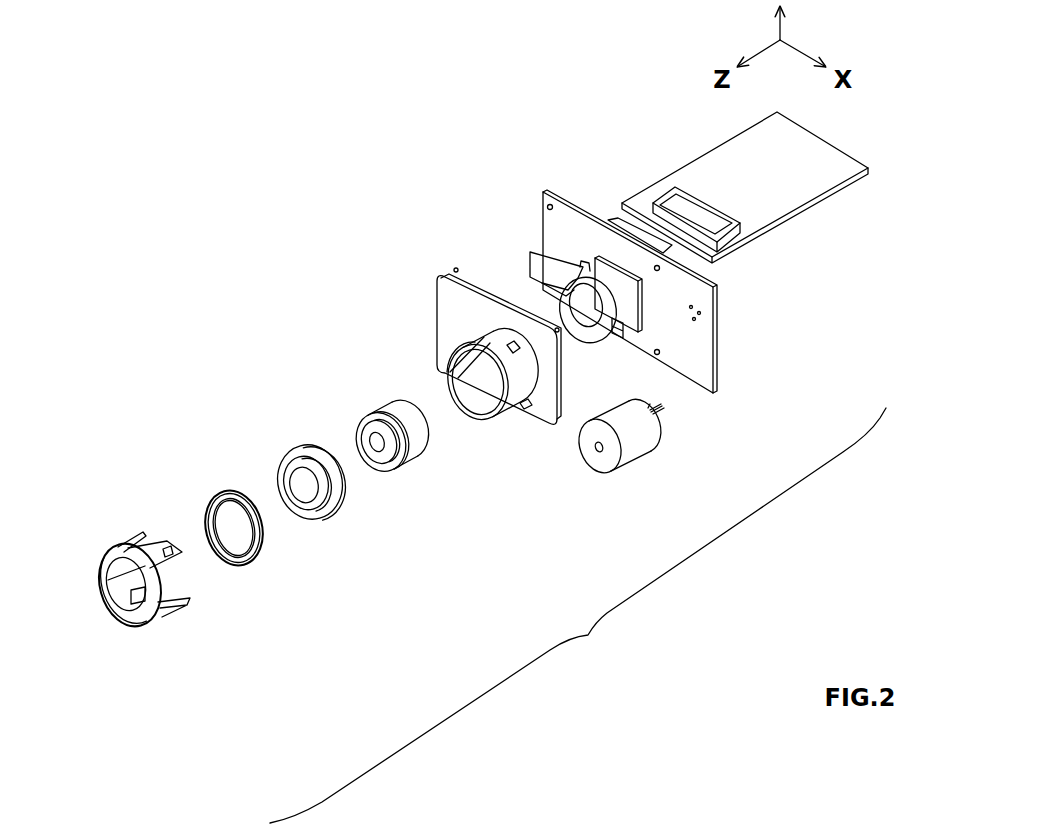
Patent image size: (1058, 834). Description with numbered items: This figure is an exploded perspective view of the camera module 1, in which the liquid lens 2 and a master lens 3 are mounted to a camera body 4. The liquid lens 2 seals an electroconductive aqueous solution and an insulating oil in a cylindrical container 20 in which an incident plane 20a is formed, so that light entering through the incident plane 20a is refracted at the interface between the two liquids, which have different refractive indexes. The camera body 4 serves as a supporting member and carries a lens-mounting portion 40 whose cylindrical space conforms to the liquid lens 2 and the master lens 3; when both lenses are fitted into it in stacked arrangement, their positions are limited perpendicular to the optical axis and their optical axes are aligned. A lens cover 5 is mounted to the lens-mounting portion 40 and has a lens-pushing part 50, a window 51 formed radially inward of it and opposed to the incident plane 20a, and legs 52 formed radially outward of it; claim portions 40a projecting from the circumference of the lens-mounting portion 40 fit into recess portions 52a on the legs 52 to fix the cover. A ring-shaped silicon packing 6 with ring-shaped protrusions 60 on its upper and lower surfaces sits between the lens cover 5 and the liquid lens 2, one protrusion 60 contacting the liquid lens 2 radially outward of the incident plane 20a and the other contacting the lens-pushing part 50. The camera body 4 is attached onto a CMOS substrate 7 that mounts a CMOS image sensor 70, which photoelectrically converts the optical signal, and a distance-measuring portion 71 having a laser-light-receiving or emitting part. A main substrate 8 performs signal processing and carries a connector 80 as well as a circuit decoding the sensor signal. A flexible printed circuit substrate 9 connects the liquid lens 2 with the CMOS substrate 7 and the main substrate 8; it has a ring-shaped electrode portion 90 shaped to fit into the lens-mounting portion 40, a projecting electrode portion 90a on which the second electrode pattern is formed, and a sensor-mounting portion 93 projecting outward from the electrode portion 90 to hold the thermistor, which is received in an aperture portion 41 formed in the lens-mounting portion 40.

The camera module 1 is at (578, 615).
The liquid lens 2 is at (315, 486).
The cylindrical container 20 is at (288, 457).
The incident plane 20a is at (303, 482).
The master lens 3 is at (412, 468).
The camera body 4 is at (463, 346).
The lens-mounting portion 40 is at (484, 346).
The claim portions 40a is at (512, 340).
The aperture portion 41 is at (482, 334).
The lens cover 5 is at (130, 561).
The lens-pushing part 50 is at (107, 560).
The window 51 is at (118, 588).
The legs 52 is at (143, 547).
The recess portions 52a is at (166, 549).
The packing 6 is at (239, 524).
The ring-shaped protrusions 60 is at (212, 500).
The CMOS substrate 7 is at (663, 368).
The CMOS image sensor 70 is at (627, 298).
The distance-measuring portion 71 is at (638, 453).
The main substrate 8 is at (718, 165).
The connector 80 is at (663, 203).
The flexible printed circuit substrate 9 is at (586, 286).
The electrode portion 90 is at (566, 274).
The electrode portion 90a is at (620, 336).
The sensor-mounting portion 93 is at (573, 280).